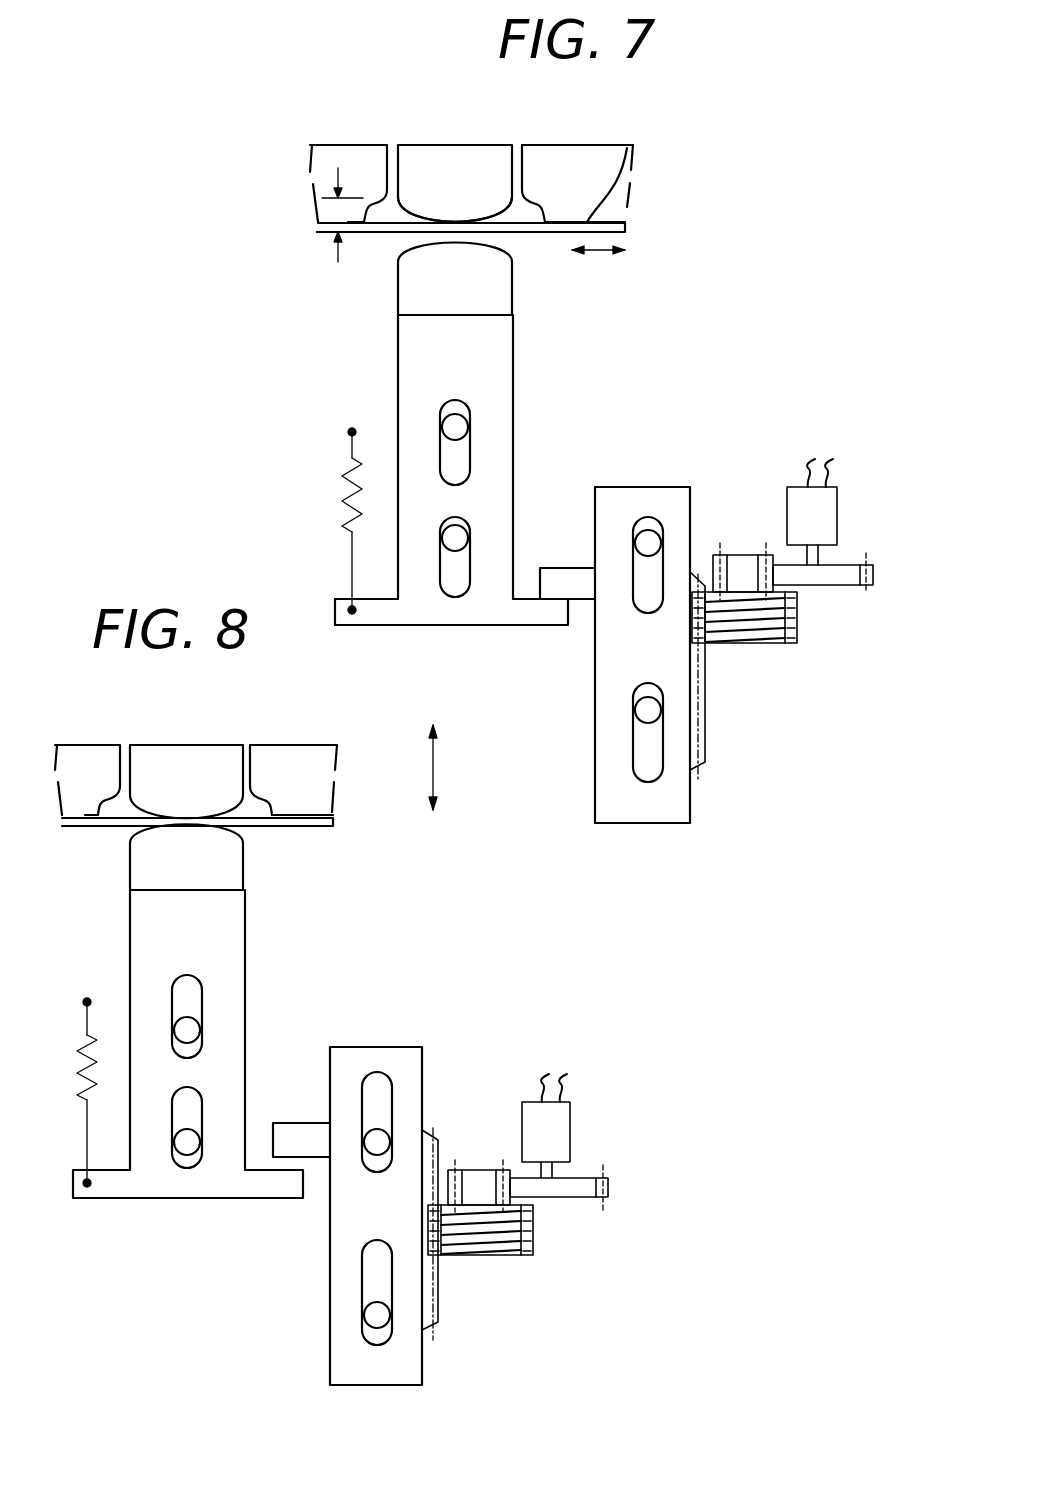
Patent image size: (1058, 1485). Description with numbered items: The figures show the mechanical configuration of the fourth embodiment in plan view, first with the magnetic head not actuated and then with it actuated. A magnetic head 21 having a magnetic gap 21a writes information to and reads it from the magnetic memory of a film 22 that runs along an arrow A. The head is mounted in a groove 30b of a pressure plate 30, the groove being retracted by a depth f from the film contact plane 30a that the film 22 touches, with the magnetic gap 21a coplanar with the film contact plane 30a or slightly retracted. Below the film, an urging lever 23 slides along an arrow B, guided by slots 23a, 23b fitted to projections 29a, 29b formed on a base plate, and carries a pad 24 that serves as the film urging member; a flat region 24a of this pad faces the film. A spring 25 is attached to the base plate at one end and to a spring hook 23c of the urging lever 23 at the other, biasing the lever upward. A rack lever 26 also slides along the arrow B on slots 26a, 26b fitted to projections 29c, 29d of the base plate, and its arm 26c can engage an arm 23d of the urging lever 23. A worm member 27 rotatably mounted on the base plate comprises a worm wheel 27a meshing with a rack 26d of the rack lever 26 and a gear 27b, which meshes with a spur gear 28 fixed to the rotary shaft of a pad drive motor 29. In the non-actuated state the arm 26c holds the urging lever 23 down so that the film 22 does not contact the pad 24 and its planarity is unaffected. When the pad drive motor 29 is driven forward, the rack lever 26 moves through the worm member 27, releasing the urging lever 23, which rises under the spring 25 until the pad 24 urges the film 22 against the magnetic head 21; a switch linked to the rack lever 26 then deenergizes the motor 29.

In FIG. 7, the magnetic head 21 is at (488, 156).
In FIG. 8, the magnetic head 21 is at (220, 757).
In FIG. 7, the magnetic gap 21a is at (455, 220).
In FIG. 7, the film 22 is at (552, 234).
In FIG. 8, the film 22 is at (300, 828).
In FIG. 7, the urging lever 23 is at (514, 365).
In FIG. 8, the urging lever 23 is at (247, 943).
In FIG. 7, the slot 23a is at (467, 453).
In FIG. 7, the slot 23b is at (440, 590).
In FIG. 7, the spring hook 23c is at (370, 612).
In FIG. 7, the arm 23d is at (525, 612).
In FIG. 7, the pad 24 is at (514, 296).
In FIG. 8, the pad 24 is at (228, 868).
In FIG. 7, the punch face 24a is at (492, 332).
In FIG. 7, the spring 25 is at (340, 494).
In FIG. 8, the spring 25 is at (72, 1057).
In FIG. 7, the rack lever 26 is at (630, 488).
In FIG. 8, the rack lever 26 is at (404, 1050).
In FIG. 7, the slot 26a is at (632, 612).
In FIG. 7, the slot 26b is at (632, 764).
In FIG. 7, the arm 26c is at (552, 568).
In FIG. 8, the arm 26c is at (292, 1133).
In FIG. 7, the rack 26d is at (706, 745).
In FIG. 7, the worm member 27 is at (800, 616).
In FIG. 8, the worm member 27 is at (512, 1258).
In FIG. 7, the worm wheel 27a is at (755, 645).
In FIG. 7, the gear 27b is at (714, 554).
In FIG. 7, the spur gear 28 is at (848, 564).
In FIG. 8, the spur gear 28 is at (578, 1198).
In FIG. 7, the pad drive motor 29 is at (838, 498).
In FIG. 8, the pad drive motor 29 is at (572, 1122).
In FIG. 7, the projection 29a is at (459, 428).
In FIG. 7, the projection 29b is at (452, 538).
In FIG. 7, the projection 29c is at (650, 542).
In FIG. 7, the projection 29d is at (638, 712).
In FIG. 7, the pressure plate 30 is at (368, 158).
In FIG. 8, the pressure plate 30 is at (102, 757).
In FIG. 7, the film contact plane 30a is at (612, 170).
In FIG. 7, the groove 30b is at (542, 218).
In FIG. 7, the depth f is at (340, 211).
In FIG. 7, the arrow A is at (600, 258).
In FIG. 7, the arrow B is at (436, 768).